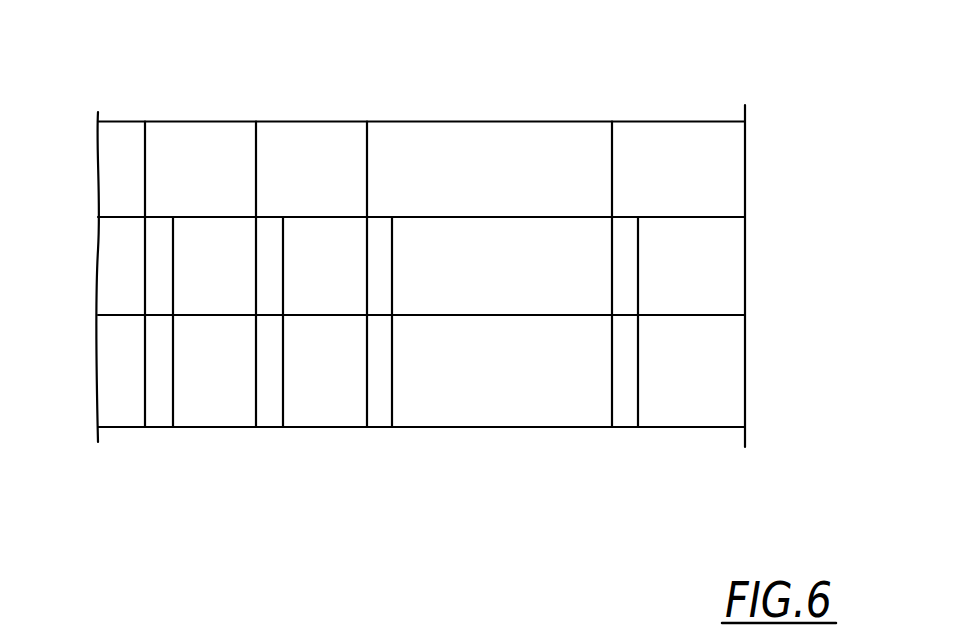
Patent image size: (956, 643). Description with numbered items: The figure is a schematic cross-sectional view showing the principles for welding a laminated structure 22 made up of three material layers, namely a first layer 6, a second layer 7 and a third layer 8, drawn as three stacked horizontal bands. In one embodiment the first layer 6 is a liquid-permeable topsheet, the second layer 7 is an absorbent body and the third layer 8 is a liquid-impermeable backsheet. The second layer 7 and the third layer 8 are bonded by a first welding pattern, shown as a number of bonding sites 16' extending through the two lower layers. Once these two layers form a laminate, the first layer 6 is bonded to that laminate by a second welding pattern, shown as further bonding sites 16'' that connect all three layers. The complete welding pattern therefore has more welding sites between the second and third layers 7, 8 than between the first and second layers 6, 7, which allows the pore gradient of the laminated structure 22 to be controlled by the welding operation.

The laminated structure 22 is at (489, 93).
The first layer 6 is at (723, 170).
The second layer 7 is at (722, 271).
The third layer 8 is at (726, 378).
The further bonding sites 16'' is at (403, 120).
The bonding sites 16' is at (415, 379).